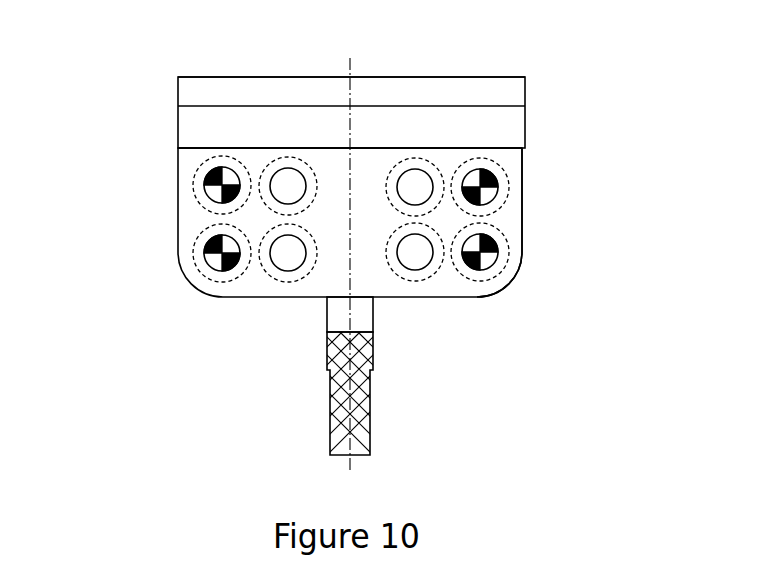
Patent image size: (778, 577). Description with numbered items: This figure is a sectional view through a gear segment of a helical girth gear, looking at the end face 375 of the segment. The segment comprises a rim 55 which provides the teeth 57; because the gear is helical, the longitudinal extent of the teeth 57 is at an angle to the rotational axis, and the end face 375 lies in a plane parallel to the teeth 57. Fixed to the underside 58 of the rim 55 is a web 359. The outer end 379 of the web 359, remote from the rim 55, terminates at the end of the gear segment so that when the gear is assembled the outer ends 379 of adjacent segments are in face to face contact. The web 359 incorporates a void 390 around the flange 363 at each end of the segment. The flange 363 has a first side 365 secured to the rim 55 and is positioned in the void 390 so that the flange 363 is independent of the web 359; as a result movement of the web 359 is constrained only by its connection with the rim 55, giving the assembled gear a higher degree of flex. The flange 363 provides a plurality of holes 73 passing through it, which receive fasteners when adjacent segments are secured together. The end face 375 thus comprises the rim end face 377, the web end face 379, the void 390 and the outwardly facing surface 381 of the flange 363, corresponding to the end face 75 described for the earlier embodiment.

The rim 55 is at (202, 123).
The teeth 57 is at (480, 90).
The rim end face 377 is at (500, 123).
The end face 375 is at (331, 266).
The first side 365 is at (203, 148).
The outwardly facing surface 381 is at (512, 210).
The flange 363 is at (510, 280).
The underside 58 is at (333, 148).
The holes 73 is at (272, 265).
The end face 75 is at (212, 256).
The void 390 is at (361, 312).
The web 359 is at (372, 404).
The outer end 379 is at (338, 395).